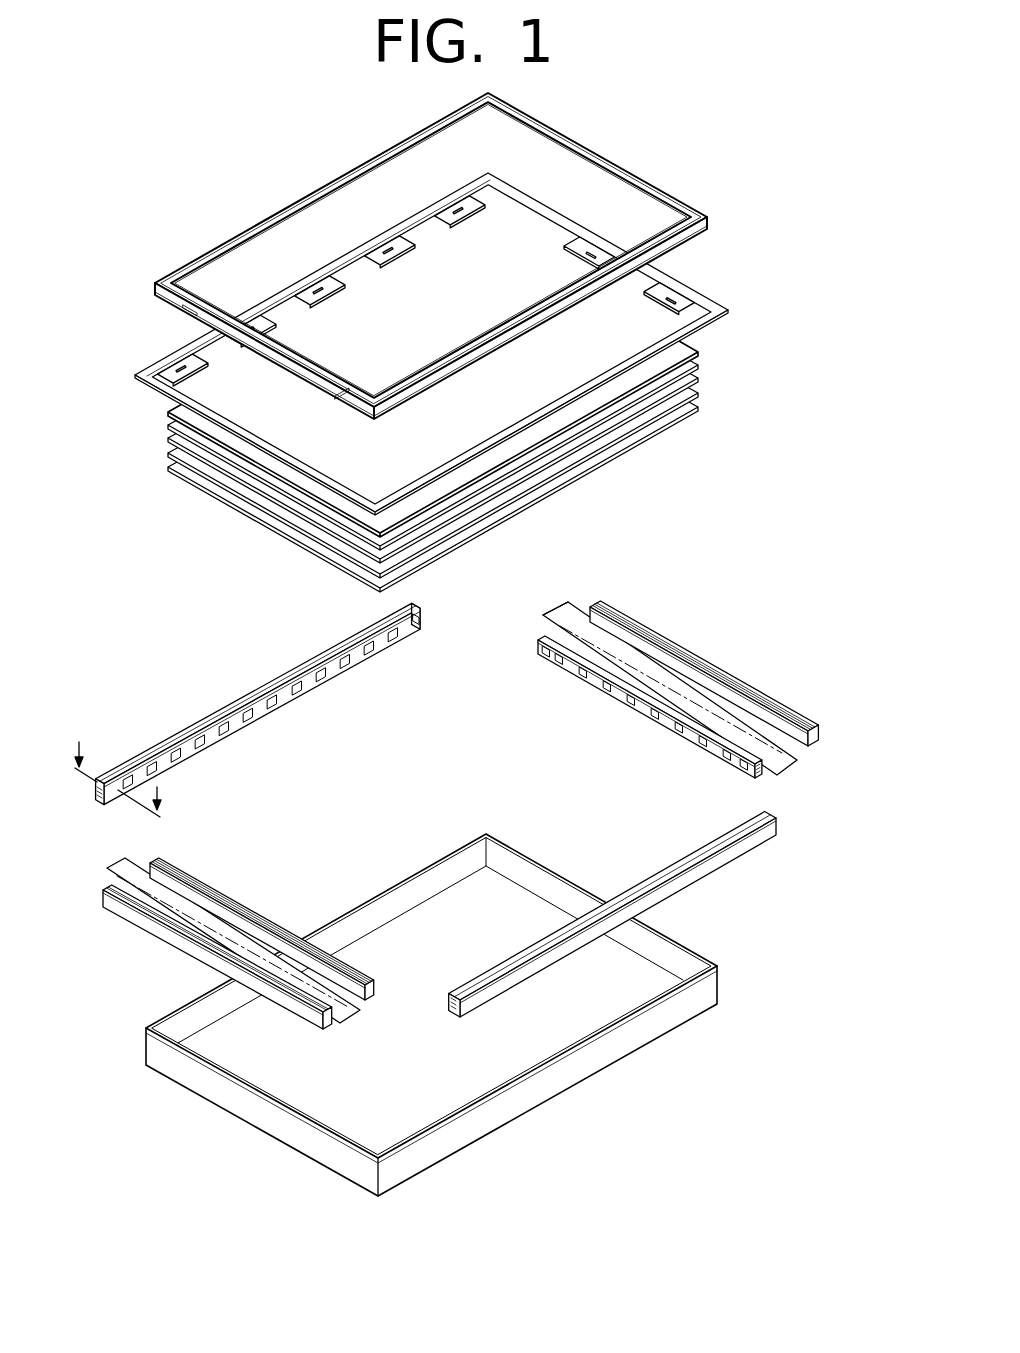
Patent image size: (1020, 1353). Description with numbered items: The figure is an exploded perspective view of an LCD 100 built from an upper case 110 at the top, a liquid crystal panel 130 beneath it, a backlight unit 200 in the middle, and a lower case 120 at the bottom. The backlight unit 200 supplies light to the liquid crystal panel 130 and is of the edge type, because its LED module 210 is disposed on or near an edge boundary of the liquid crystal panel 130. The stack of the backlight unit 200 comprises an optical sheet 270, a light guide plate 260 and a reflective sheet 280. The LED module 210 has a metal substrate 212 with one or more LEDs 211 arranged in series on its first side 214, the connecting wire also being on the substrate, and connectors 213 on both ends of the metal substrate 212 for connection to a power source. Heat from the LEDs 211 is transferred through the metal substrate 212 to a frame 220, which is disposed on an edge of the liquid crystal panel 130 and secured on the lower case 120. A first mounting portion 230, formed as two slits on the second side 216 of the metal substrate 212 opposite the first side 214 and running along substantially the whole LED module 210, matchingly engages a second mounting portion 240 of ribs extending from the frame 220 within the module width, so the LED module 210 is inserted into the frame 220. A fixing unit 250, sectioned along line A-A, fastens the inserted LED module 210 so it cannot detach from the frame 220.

The LCD 100 is at (278, 122).
The upper case 110 is at (606, 153).
The lower case 120 is at (540, 1099).
The liquid crystal panel 130 is at (697, 283).
The backlight unit 200 is at (823, 347).
The LED module 210 is at (418, 816).
The LEDs 211 is at (580, 678).
The metal substrate 212 is at (620, 695).
The connectors 213 is at (542, 654).
The first side 214 is at (671, 728).
The second side 216 is at (551, 634).
The frame 220 is at (447, 809).
The first mounting portion 230 is at (757, 775).
The second mounting portion 240 is at (782, 725).
The fixing unit 250 is at (662, 720).
The light guide plate 260 is at (700, 389).
The optical sheet 270 is at (701, 348).
The reflective sheet 280 is at (700, 408).